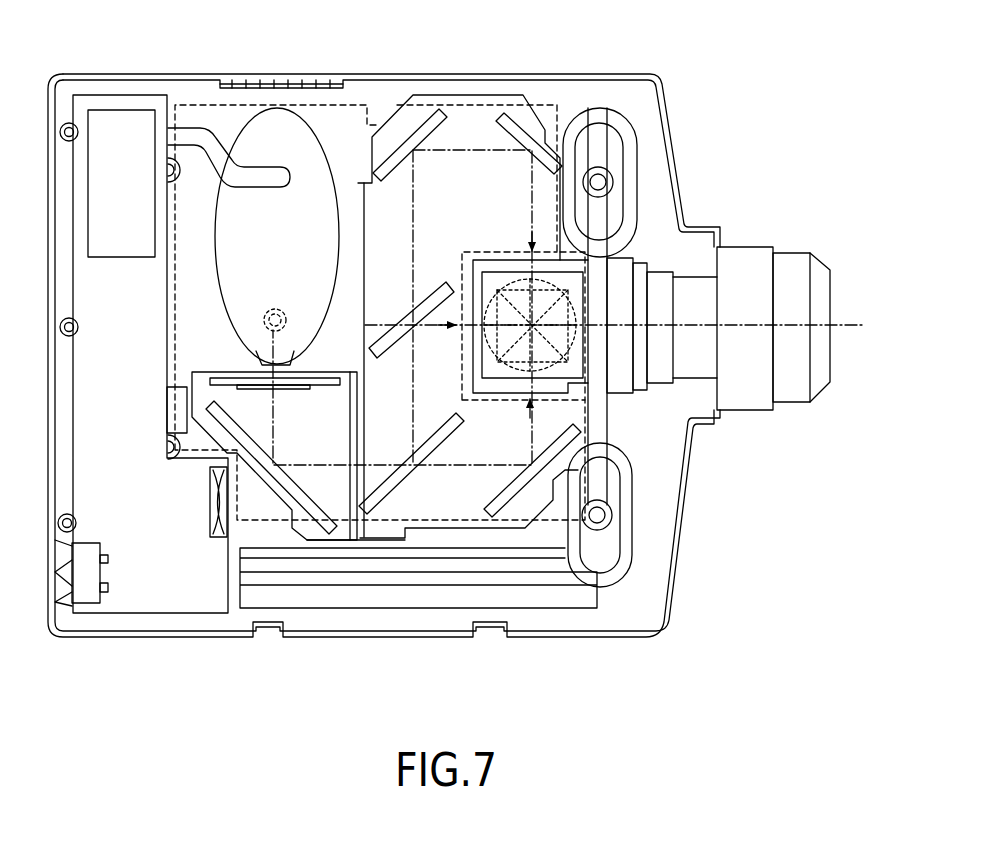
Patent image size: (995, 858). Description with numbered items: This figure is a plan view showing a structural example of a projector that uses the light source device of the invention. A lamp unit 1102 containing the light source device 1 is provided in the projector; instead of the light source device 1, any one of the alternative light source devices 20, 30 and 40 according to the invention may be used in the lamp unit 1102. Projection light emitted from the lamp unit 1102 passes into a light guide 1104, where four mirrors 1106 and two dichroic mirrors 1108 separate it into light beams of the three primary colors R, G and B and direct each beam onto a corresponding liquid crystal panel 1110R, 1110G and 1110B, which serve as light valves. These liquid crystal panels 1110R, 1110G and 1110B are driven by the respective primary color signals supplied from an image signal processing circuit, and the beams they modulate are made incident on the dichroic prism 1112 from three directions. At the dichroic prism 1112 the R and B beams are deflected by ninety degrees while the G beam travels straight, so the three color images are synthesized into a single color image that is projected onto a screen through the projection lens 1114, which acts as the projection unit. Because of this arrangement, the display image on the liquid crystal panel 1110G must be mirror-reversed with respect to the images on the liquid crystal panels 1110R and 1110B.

The light source device 1 is at (240, 292).
The light source device 20 is at (384, 355).
The light source device 30 is at (281, 84).
The light source device 40 is at (68, 327).
The lamp unit 1102 is at (330, 158).
The light guide 1104 is at (417, 125).
The mirror 1106 is at (445, 125).
The dichroic mirror 1108 is at (397, 345).
The liquid crystal panel 1110R is at (503, 253).
The liquid crystal panel 1110G is at (473, 290).
The liquid crystal panel 1110B is at (503, 390).
The dichroic prism 1112 is at (583, 381).
The projection lens 1114 is at (790, 260).